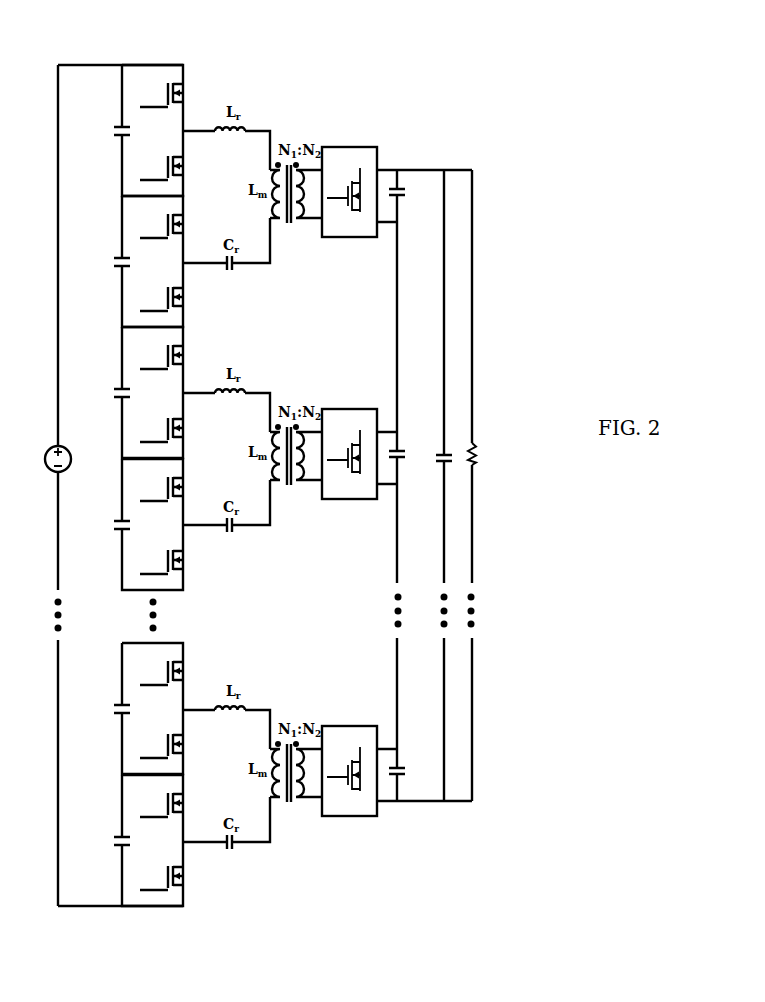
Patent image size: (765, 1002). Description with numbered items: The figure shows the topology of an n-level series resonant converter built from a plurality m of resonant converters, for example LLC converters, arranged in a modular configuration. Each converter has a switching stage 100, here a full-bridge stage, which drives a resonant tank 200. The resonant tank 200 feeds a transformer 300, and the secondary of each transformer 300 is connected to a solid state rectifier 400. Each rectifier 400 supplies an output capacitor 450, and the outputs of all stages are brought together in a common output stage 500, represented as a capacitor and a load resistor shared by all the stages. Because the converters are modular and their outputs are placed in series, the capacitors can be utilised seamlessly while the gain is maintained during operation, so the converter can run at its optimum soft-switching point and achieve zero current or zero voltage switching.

The switching stage 100 is at (127, 57).
The resonant tank 200 is at (238, 102).
The transformer 300 is at (297, 135).
The solid state rectifier 400 is at (350, 146).
The output capacitor 450 is at (405, 163).
The common output stage 500 is at (465, 163).